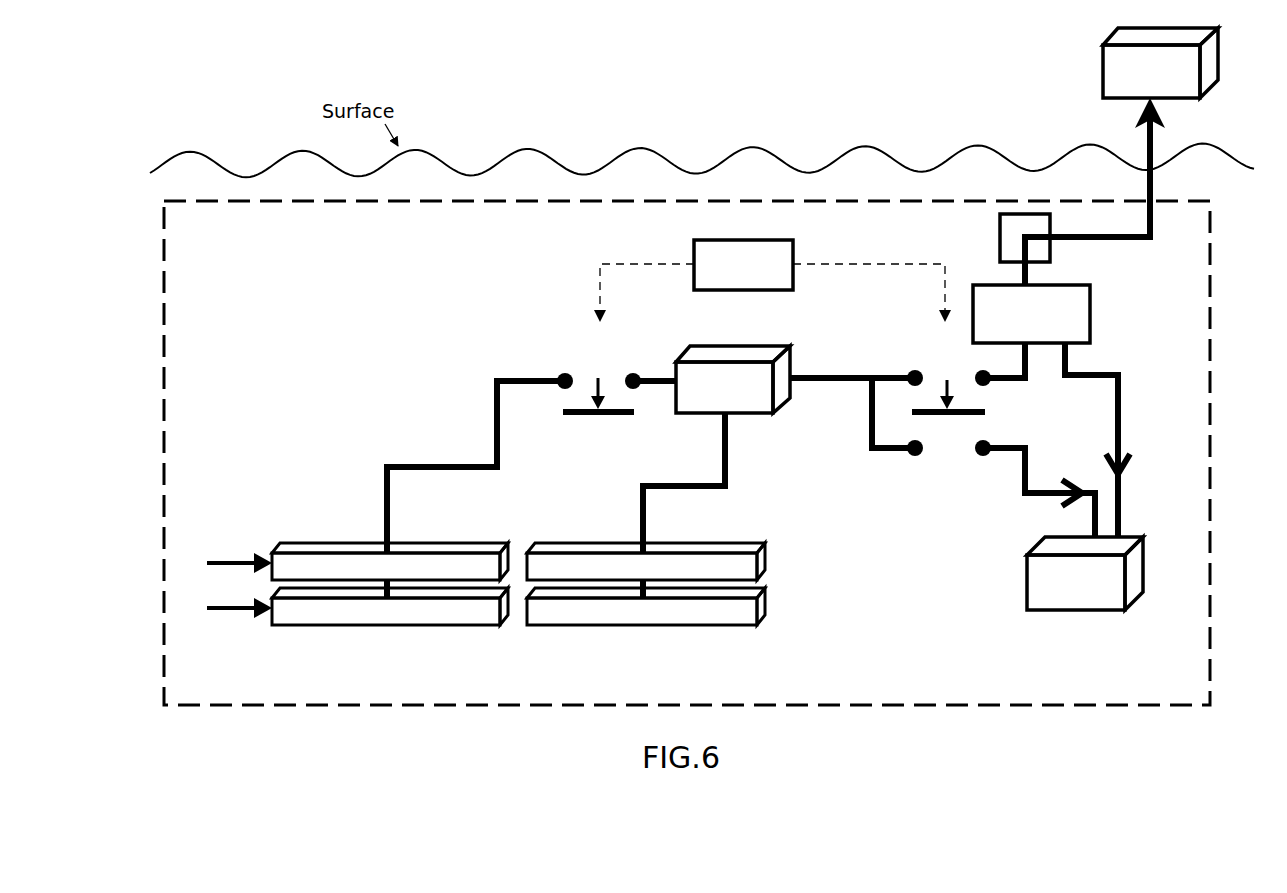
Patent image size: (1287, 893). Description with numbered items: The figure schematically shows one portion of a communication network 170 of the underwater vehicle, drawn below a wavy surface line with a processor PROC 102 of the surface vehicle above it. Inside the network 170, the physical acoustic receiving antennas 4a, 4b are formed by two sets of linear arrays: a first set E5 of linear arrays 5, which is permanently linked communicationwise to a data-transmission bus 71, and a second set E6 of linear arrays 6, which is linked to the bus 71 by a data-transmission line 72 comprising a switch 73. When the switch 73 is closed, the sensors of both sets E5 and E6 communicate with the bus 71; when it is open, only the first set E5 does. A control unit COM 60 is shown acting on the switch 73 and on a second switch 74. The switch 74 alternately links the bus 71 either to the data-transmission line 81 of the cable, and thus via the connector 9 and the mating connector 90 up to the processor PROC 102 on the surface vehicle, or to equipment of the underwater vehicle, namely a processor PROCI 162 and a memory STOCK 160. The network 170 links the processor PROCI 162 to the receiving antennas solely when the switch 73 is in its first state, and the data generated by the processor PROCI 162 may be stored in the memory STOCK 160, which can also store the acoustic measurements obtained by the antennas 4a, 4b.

The processor PROC 102 is at (1101, 66).
The connector 90 is at (1000, 234).
The connector 9 is at (1050, 248).
The processor PROCI 162 is at (1091, 312).
The control unit COM 60 is at (737, 240).
The data-transmission bus 71 is at (784, 405).
The switch 73 is at (589, 355).
The switch 74 is at (937, 358).
The data-transmission line 72 is at (430, 465).
The data-transmission line 81 is at (991, 385).
The memory STOCK 160 is at (1078, 610).
The communication network 170 is at (455, 706).
The linear array 6 is at (334, 551).
The linear array 5 is at (599, 551).
The physical acoustic receiving antenna 4a is at (224, 563).
The physical acoustic receiving antenna 4b is at (224, 608).
The second set of linear arrays E6 is at (390, 593).
The first set of linear arrays E5 is at (646, 592).